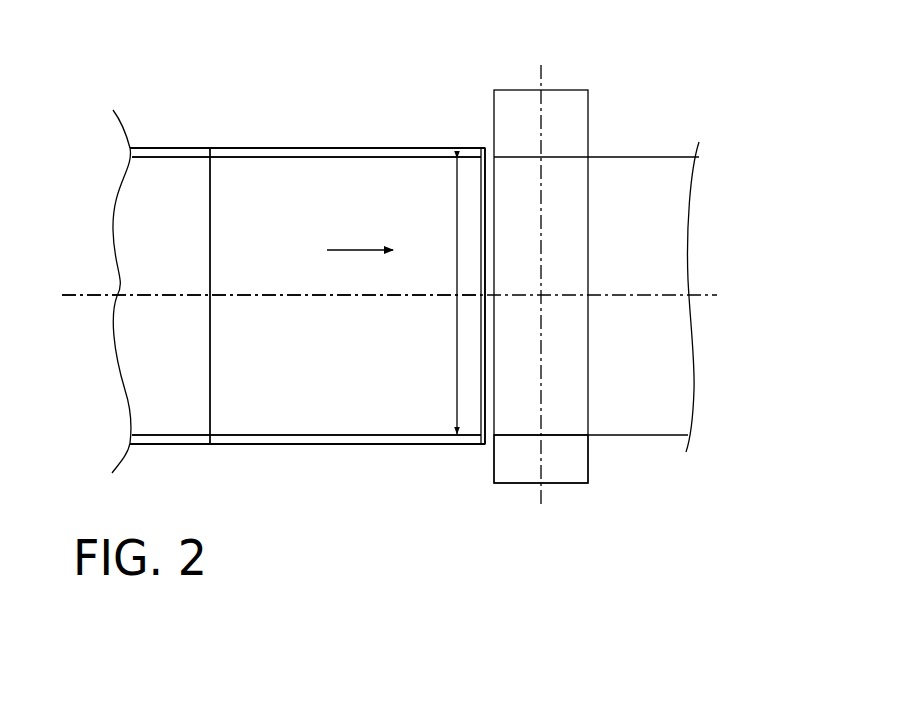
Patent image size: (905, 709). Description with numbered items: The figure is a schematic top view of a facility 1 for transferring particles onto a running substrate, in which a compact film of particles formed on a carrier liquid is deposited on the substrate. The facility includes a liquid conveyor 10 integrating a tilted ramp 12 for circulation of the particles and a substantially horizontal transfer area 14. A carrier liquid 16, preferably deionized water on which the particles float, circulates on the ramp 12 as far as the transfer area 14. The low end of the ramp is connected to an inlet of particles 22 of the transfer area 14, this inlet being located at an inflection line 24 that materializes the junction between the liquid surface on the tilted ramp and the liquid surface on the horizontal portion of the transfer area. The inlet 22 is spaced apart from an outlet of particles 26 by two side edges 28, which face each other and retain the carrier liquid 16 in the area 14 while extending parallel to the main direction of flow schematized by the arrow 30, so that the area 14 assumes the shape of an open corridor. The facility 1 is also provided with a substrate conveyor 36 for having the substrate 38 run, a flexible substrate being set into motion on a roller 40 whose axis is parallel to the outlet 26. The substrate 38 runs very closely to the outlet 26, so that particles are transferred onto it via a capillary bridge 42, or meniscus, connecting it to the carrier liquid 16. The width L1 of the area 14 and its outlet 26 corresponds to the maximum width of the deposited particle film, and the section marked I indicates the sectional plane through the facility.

The facility 1 is at (616, 64).
The liquid conveyor 10 is at (365, 512).
The tilted ramp 12 is at (166, 460).
The transfer area 14 is at (400, 452).
The carrier liquid 16 is at (414, 214).
The inlet of particles 22 is at (212, 308).
The inflection line 24 is at (208, 263).
The outlet of particles 26 is at (481, 170).
The side edges 28 is at (418, 149).
The arrow 30 is at (352, 247).
The substrate conveyor 36 is at (617, 480).
The substrate 38 is at (640, 436).
The roller 40 is at (527, 477).
The capillary bridge 42 is at (488, 430).
The width L1 is at (455, 140).
The section line I- I is at (68, 256).